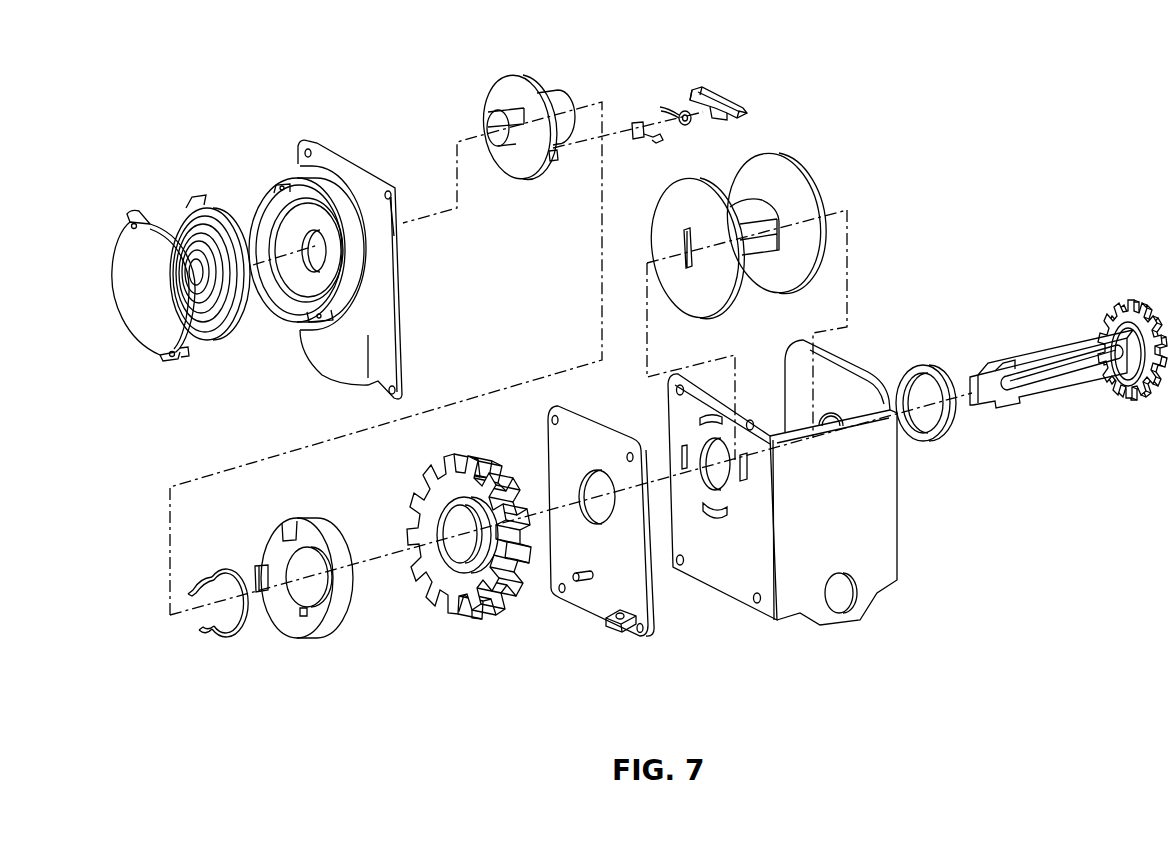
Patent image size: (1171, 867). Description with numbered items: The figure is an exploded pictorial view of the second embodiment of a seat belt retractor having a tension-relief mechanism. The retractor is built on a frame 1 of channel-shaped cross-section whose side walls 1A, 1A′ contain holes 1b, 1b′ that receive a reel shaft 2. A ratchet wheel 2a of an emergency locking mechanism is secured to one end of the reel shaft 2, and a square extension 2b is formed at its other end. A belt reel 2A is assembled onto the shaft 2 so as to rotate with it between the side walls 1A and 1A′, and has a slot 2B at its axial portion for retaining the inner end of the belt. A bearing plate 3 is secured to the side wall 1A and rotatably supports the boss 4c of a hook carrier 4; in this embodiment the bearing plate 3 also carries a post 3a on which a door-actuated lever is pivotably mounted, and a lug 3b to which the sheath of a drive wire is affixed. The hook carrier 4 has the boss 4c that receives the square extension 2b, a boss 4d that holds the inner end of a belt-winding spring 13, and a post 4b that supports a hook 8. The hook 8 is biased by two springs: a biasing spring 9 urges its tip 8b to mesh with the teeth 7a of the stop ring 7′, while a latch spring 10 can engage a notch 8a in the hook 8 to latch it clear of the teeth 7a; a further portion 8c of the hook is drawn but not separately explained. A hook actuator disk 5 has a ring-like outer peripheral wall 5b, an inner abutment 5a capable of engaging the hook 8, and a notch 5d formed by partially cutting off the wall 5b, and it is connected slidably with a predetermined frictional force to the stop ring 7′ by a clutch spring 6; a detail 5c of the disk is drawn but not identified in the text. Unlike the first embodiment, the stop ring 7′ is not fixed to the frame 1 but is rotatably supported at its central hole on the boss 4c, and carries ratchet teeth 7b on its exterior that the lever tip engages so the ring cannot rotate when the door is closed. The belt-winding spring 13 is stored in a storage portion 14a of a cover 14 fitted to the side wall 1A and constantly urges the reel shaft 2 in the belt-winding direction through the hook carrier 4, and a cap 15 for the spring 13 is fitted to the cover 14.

The frame 1 is at (773, 510).
The side wall 1A is at (723, 583).
The side wall 1A′ is at (865, 382).
The hole 1b is at (700, 457).
The hole 1b′ is at (832, 408).
The reel shaft 2 is at (1045, 400).
The ratchet wheel 2a is at (1123, 300).
The square extension 2b is at (975, 377).
The belt reel 2A is at (800, 193).
The slot 2B is at (758, 232).
The bearing plate 3 is at (597, 622).
The post 3a is at (583, 585).
The lug 3b is at (610, 628).
The hook carrier 4 is at (506, 142).
The post 4b is at (557, 161).
The boss 4c is at (560, 100).
The boss 4d is at (488, 115).
The hook actuator disk 5 is at (303, 591).
The inner abutment 5a is at (293, 537).
The outer peripheral wall 5b is at (288, 622).
The hole 5c is at (305, 616).
The notch 5d is at (262, 547).
The clutch spring 6 is at (236, 633).
The stop ring 7′ is at (469, 555).
The teeth 7a is at (448, 597).
The ratchet teeth 7b is at (478, 462).
The hook 8 is at (720, 93).
The notch 8a is at (726, 120).
The tip 8b is at (695, 88).
The lever end 8c is at (745, 117).
The biasing spring 9 is at (660, 107).
The latch spring 10 is at (637, 141).
The belt-winding spring 13 is at (178, 204).
The cover 14 is at (355, 183).
The storage portion 14a is at (300, 302).
The cap 15 is at (122, 272).